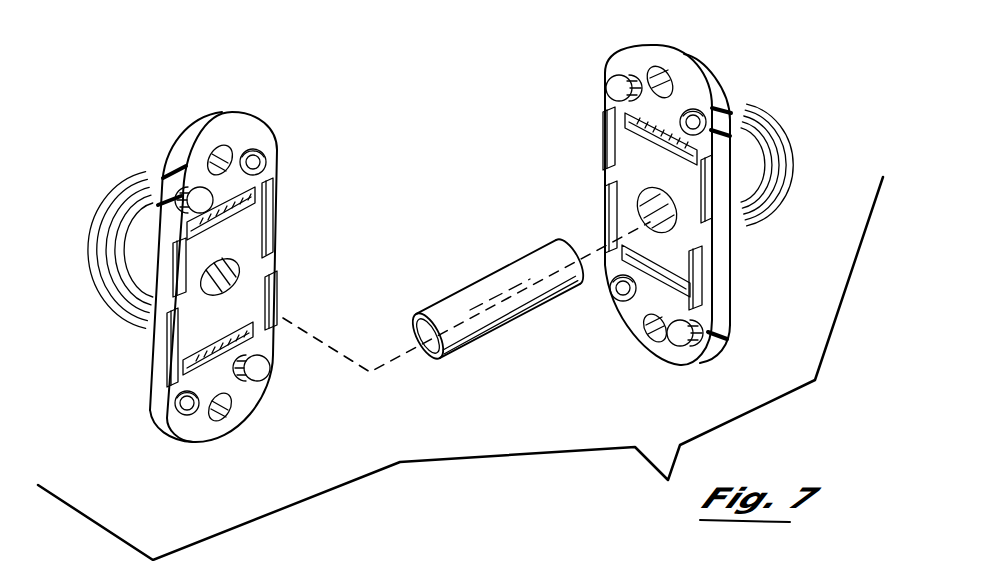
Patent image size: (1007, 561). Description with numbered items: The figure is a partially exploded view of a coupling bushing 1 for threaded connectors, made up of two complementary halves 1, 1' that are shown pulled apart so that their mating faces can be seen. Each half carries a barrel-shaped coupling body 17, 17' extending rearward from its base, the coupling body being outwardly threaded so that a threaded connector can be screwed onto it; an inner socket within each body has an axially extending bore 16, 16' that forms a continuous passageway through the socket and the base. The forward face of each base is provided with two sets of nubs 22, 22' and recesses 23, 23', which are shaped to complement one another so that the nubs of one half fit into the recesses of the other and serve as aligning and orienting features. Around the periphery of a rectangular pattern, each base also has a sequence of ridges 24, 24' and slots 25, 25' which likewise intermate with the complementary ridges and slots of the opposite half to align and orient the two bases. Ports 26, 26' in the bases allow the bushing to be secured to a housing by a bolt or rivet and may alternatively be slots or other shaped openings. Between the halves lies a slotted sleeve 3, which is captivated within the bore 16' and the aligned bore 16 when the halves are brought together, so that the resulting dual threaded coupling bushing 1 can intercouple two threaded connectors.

The coupling bushing 1 is at (239, 264).
The coupling bushing half 1' is at (674, 182).
The slotted sleeve 3 is at (483, 272).
The bore 16 is at (263, 274).
The bore 16' is at (657, 226).
The coupling body 17 is at (103, 230).
The coupling body 17' is at (794, 147).
The nubs 22 is at (235, 262).
The nubs 22' is at (618, 245).
The recesses 23 is at (239, 312).
The recesses 23' is at (651, 197).
The ridges 24 is at (217, 298).
The ridges 24' is at (665, 208).
The slots 25 is at (212, 294).
The slots 25' is at (659, 210).
The ports 26 is at (229, 278).
The ports 26' is at (629, 210).